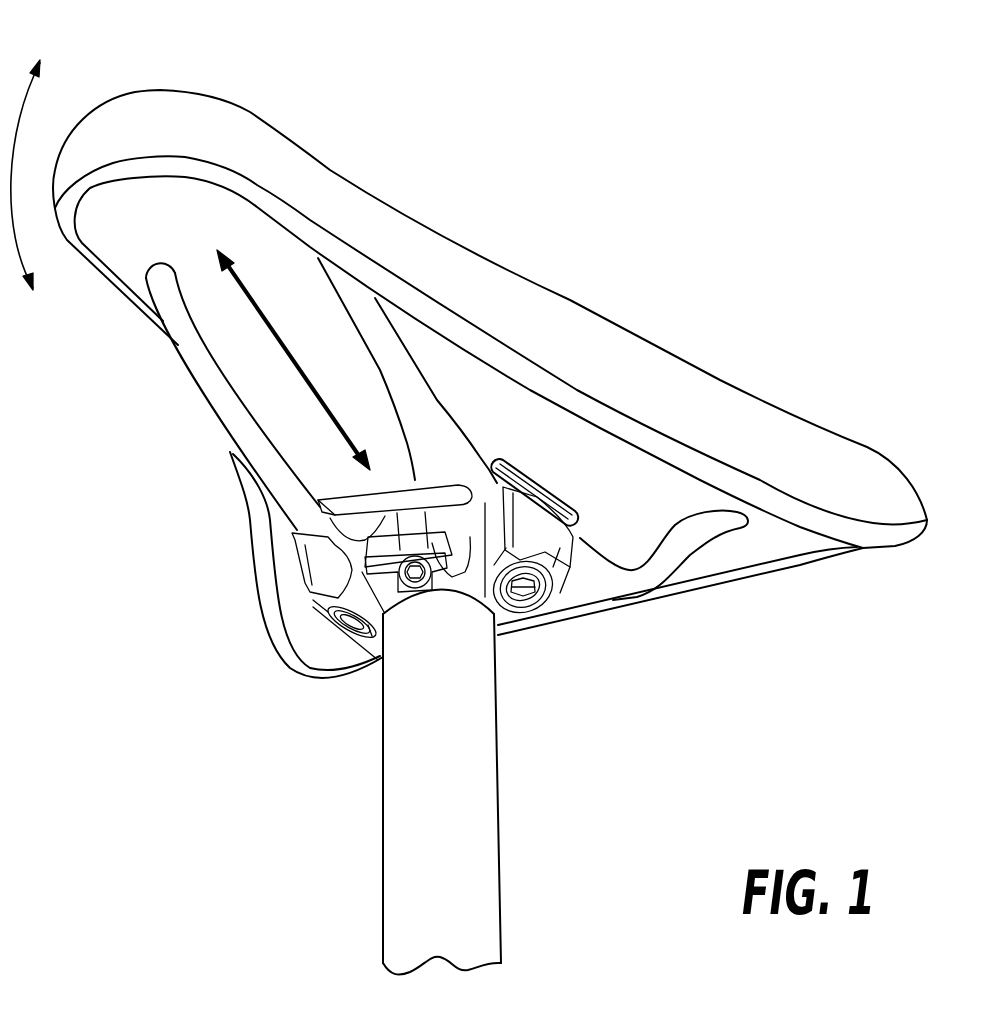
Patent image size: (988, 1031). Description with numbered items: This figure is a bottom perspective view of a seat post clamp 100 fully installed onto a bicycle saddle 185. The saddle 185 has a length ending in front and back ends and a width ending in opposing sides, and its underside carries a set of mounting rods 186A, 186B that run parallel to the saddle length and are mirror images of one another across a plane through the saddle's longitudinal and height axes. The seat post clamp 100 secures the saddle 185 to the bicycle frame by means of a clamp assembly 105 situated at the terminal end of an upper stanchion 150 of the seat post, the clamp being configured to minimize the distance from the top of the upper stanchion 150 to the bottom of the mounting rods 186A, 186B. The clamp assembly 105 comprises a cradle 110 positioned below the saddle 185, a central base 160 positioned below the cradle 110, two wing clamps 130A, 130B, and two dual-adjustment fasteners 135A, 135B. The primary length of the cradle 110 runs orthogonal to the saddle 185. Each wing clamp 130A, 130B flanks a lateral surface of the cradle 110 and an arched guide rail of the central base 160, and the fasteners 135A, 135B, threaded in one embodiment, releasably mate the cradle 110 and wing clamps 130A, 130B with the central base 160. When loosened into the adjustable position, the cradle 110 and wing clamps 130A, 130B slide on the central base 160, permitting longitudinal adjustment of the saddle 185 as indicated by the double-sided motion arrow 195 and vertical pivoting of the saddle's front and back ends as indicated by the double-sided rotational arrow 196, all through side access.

The seat post clamp 100 is at (706, 118).
The clamp assembly 105 is at (536, 652).
The cradle 110 is at (397, 500).
The wing clamp 130A is at (320, 573).
The wing clamp 130B is at (560, 548).
The dual-adjustment fastener 135A is at (365, 642).
The dual-adjustment fastener 135B is at (533, 600).
The upper stanchion 150 is at (410, 838).
The central base 160 is at (327, 600).
The bicycle saddle 185 is at (560, 318).
The mounting rod 186A is at (218, 405).
The mounting rod 186B is at (717, 530).
The double-sided motion arrow 195 is at (291, 357).
The double-sided rotational arrow 196 is at (20, 123).